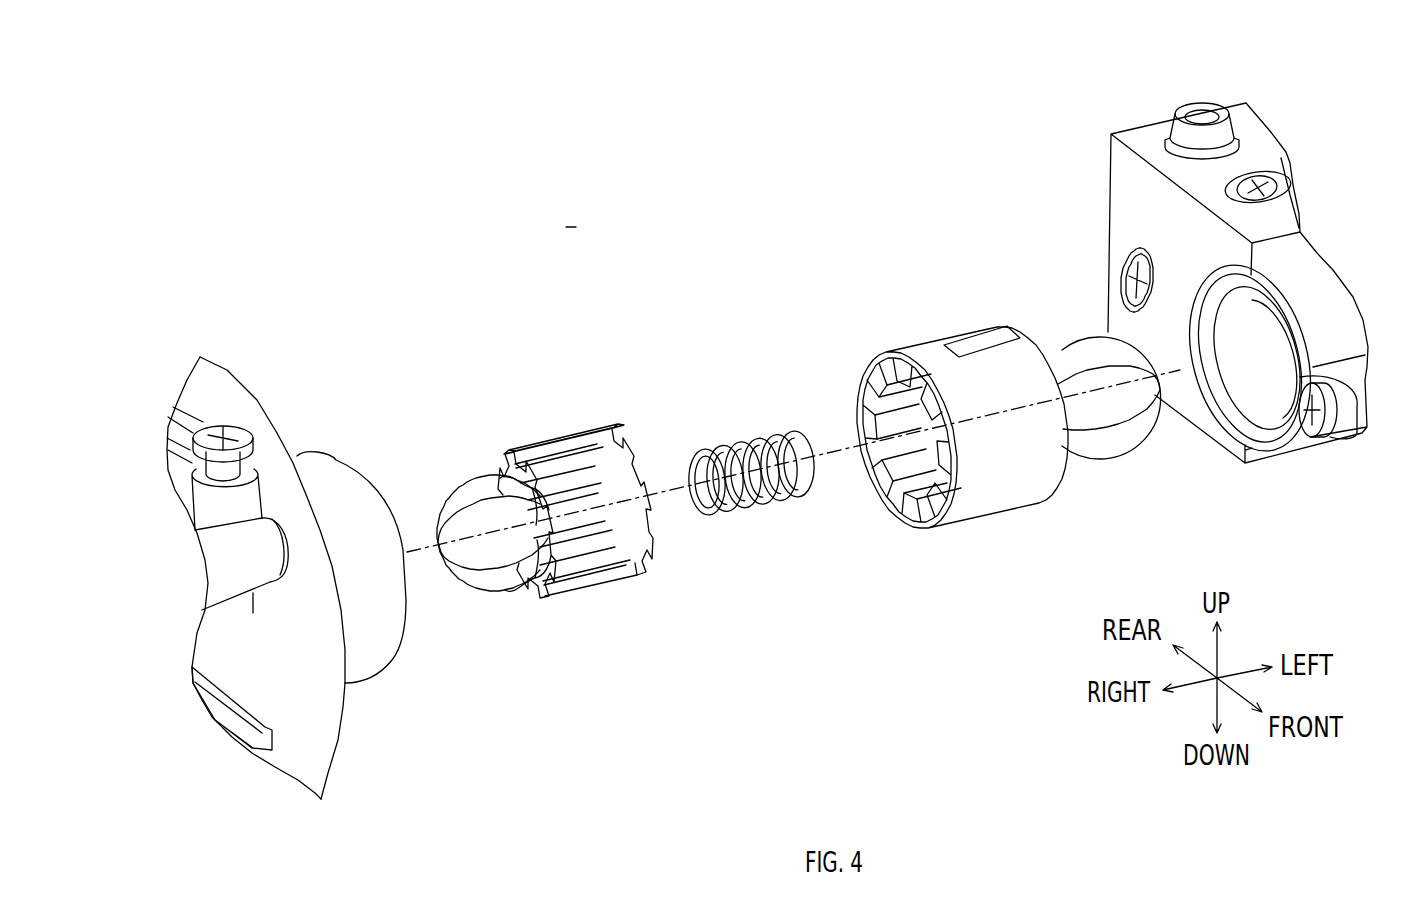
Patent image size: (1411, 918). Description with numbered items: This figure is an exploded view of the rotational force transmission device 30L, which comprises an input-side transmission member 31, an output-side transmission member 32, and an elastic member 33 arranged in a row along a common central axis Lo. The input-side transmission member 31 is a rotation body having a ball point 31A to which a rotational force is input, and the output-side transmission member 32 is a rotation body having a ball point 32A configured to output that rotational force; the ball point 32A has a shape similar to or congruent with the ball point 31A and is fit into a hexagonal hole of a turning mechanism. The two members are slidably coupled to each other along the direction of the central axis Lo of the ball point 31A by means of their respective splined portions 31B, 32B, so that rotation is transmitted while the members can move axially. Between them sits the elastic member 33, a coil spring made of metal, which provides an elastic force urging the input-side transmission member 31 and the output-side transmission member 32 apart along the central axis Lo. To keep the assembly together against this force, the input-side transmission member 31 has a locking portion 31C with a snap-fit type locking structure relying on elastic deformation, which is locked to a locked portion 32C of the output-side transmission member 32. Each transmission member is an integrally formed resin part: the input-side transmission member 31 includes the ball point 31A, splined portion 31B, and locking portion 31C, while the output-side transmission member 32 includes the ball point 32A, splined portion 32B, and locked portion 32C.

The rotational force transmission device 30L is at (767, 451).
The input-side transmission member 31 is at (545, 505).
The ball point 31A is at (485, 587).
The splined portion 31B is at (592, 593).
The locking portion 31C is at (600, 433).
The output-side transmission member 32 is at (1009, 423).
The ball point 32A is at (1108, 457).
The splined portion 32B is at (887, 507).
The locked portion 32C is at (960, 347).
The elastic member 33 is at (777, 440).
The central axis Lo is at (823, 455).